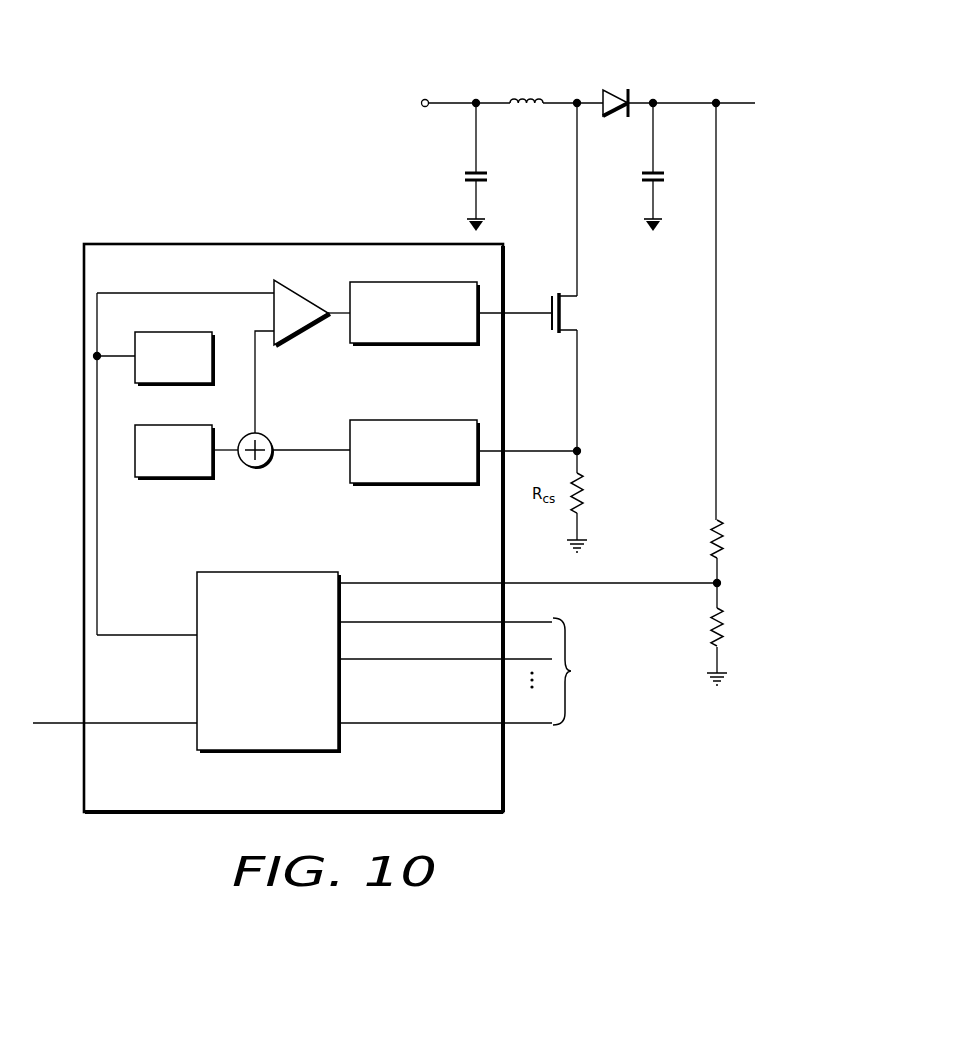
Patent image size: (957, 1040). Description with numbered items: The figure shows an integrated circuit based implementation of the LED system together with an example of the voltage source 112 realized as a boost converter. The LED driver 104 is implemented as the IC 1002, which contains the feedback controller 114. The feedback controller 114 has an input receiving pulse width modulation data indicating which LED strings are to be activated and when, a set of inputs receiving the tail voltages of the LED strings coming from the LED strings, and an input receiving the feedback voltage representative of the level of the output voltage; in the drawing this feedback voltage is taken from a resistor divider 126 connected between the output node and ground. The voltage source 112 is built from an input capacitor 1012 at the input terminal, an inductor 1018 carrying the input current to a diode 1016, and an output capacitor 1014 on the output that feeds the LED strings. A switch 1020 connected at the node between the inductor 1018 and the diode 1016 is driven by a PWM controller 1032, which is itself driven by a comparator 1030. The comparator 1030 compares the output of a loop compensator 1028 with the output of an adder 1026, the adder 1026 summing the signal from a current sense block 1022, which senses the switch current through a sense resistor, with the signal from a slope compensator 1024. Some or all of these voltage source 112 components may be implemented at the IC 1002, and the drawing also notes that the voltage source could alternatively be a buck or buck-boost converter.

The voltage source 112 is at (465, 56).
The inductor 1018 is at (533, 96).
The diode 1016 is at (617, 96).
The input capacitor 1012 is at (482, 168).
The output capacitor 1014 is at (660, 168).
The switch 1020 is at (564, 286).
The comparator 1030 is at (292, 289).
The PWM controller 1032 is at (442, 277).
The loop compensator 1028 is at (182, 327).
The slope compensator 1024 is at (182, 422).
The adder 1026 is at (267, 432).
The current sense block 1022 is at (442, 417).
The LED driver 104 is at (166, 554).
The feedback controller 114 is at (297, 571).
The feedback resistor divider 126 is at (729, 657).
The IC 1002 is at (452, 798).